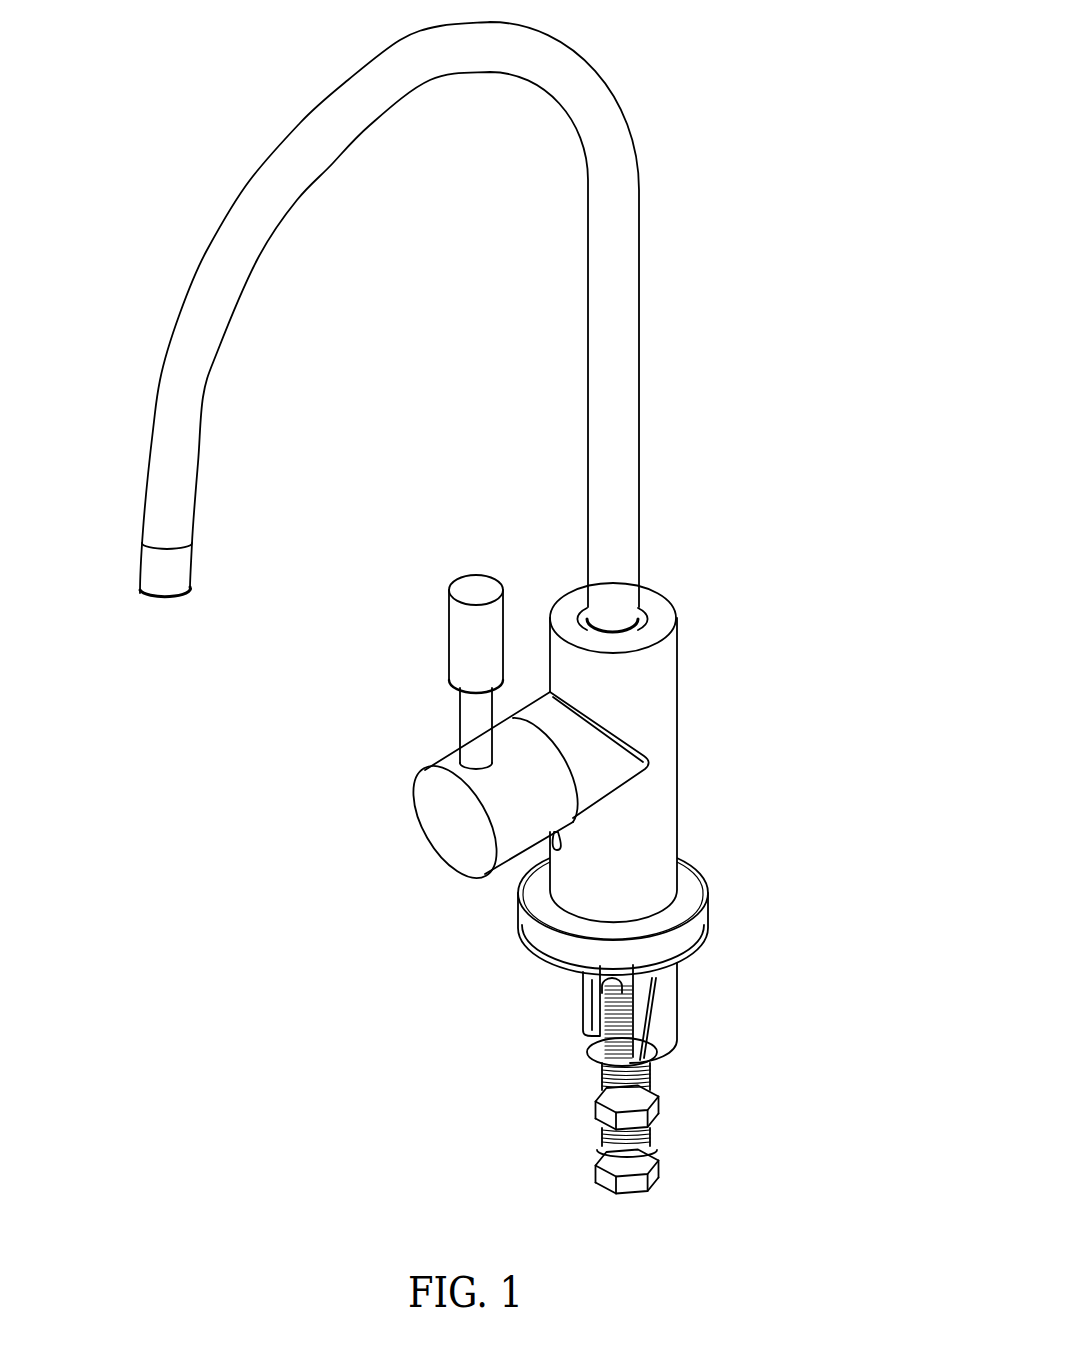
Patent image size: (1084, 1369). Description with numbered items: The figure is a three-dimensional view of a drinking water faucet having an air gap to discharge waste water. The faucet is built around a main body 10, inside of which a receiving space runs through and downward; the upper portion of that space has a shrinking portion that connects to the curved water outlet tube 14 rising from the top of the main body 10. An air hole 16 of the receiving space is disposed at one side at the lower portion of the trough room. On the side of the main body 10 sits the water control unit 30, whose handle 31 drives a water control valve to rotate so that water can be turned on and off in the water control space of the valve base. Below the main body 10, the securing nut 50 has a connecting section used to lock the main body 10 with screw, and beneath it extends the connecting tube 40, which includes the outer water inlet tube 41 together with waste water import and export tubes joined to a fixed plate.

The main body 10 is at (684, 712).
The water outlet tube 14 is at (615, 359).
The air hole 16 is at (555, 840).
The water control unit 30 is at (398, 693).
The handle 31 is at (437, 803).
The connecting tube 40 is at (612, 1078).
The outer water inlet tube 41 is at (655, 1077).
The securing nut 50 is at (713, 910).